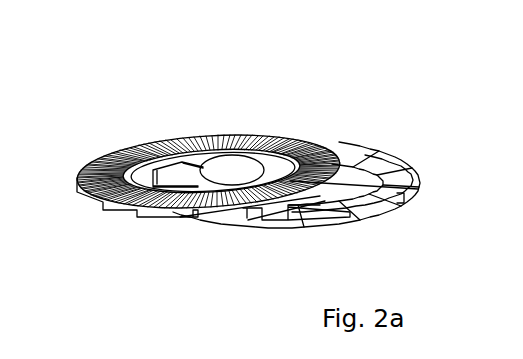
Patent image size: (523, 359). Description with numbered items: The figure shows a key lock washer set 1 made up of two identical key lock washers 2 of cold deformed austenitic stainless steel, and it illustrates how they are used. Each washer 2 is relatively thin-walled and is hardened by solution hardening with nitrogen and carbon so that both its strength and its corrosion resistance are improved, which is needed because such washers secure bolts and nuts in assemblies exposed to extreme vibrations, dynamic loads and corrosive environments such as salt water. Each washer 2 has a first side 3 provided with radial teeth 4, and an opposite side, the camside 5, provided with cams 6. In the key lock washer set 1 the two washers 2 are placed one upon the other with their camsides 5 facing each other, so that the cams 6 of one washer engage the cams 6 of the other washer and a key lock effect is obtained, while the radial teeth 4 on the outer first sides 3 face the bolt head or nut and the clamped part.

The key lock washer set 1 is at (268, 153).
The key lock washer 2 is at (102, 207).
The first side 3 is at (152, 153).
The radial teeth 4 is at (218, 151).
The camside 5 is at (400, 188).
The cams 6 is at (335, 212).